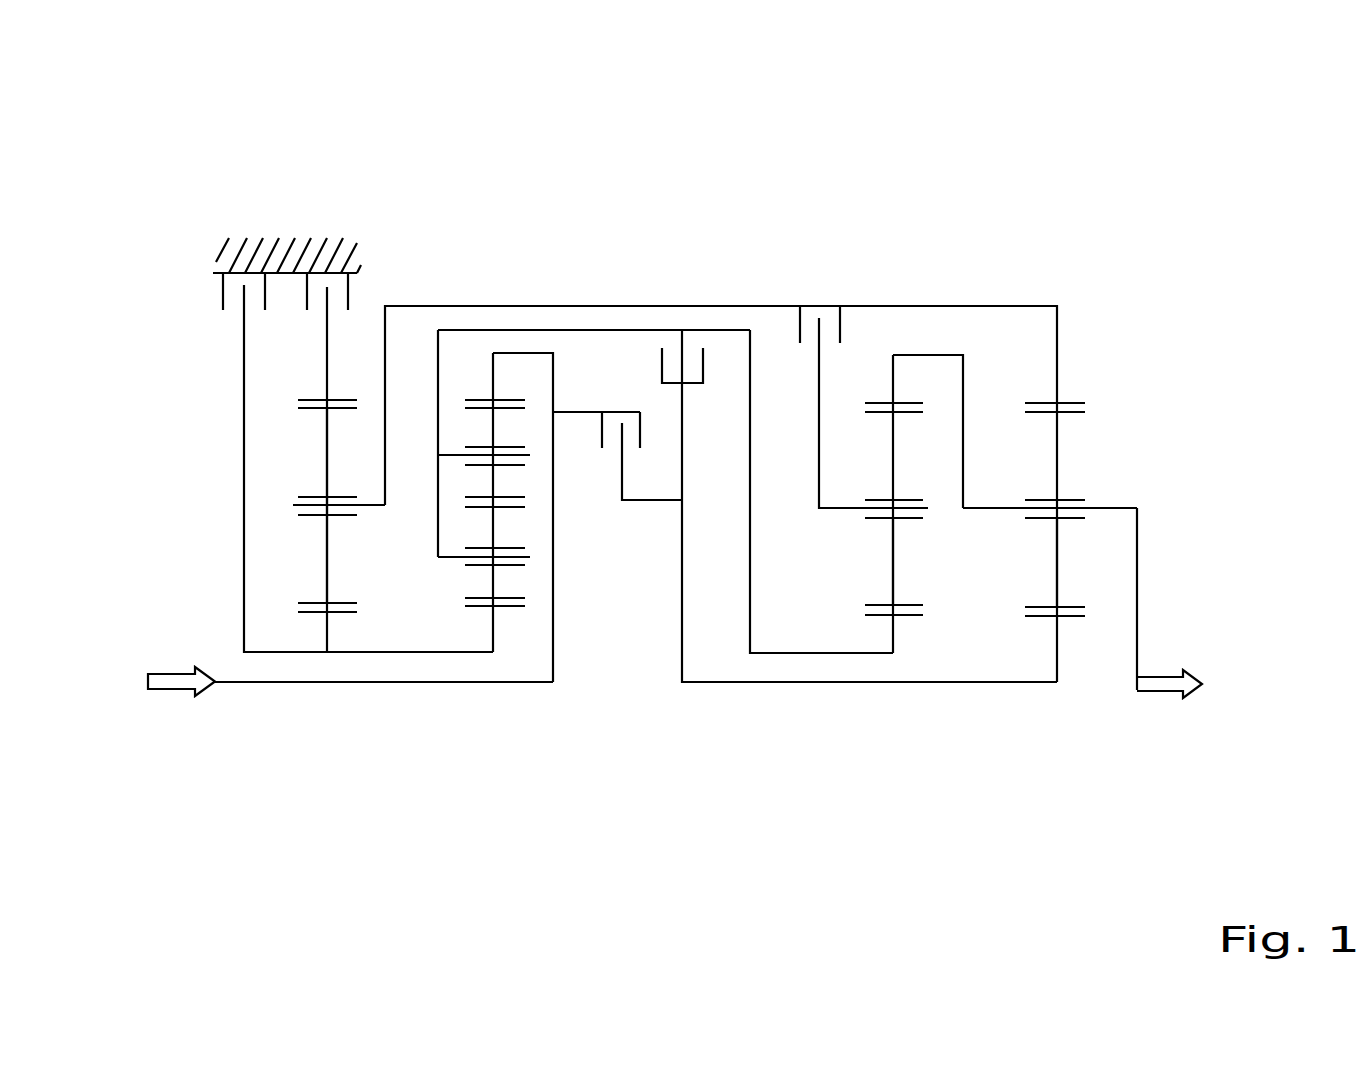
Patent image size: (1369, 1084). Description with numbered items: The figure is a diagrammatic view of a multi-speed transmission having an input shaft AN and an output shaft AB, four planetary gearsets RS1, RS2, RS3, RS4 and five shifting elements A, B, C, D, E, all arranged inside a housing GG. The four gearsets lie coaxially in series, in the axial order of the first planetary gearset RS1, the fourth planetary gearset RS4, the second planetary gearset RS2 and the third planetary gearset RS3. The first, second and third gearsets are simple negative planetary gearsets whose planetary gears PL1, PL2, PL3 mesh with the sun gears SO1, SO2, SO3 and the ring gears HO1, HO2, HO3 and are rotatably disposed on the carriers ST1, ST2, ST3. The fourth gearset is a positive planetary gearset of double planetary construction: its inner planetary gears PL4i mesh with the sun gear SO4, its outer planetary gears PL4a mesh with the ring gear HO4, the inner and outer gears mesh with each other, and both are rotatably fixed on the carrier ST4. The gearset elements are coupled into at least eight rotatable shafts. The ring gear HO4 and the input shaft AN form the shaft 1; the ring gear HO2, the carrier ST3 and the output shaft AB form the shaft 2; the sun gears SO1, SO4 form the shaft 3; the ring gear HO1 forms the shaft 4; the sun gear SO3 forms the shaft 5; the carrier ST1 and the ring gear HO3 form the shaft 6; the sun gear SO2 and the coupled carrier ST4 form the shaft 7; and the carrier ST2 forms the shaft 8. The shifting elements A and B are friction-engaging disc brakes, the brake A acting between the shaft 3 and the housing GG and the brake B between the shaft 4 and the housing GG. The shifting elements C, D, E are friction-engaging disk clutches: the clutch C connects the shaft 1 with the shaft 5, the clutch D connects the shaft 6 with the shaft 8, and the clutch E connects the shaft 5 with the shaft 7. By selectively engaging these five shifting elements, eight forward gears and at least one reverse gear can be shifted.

The housing GG is at (284, 270).
The brake A is at (214, 323).
The brake B is at (308, 324).
The clutch C is at (628, 391).
The clutch D is at (797, 292).
The clutch E is at (712, 351).
The input shaft AN is at (166, 691).
The output shaft AB is at (1167, 695).
The shaft 1 is at (553, 521).
The shaft 2 is at (1140, 594).
The shaft 3 is at (349, 648).
The shaft 4 is at (325, 364).
The shaft 5 is at (728, 684).
The shaft 6 is at (575, 304).
The shaft 7 is at (749, 521).
The shaft 8 is at (820, 437).
The first planetary gearset RS1 is at (221, 471).
The second planetary gearset RS2 is at (844, 505).
The third planetary gearset RS3 is at (1130, 475).
The fourth planetary gearset RS4 is at (497, 471).
The ring gear HO1 is at (328, 395).
The ring gear HO2 is at (893, 385).
The ring gear HO3 is at (1057, 338).
The ring gear HO4 is at (492, 367).
The sun gear SO1 is at (325, 628).
The sun gear SO2 is at (893, 626).
The sun gear SO3 is at (1058, 621).
The sun gear SO4 is at (495, 581).
The carrier ST1 is at (298, 505).
The carrier ST2 is at (842, 509).
The carrier ST3 is at (1107, 509).
The carrier ST4 is at (452, 455).
The planetary gears PL1 is at (327, 571).
The planetary gears PL2 is at (892, 547).
The planetary gears PL3 is at (1057, 462).
The outer planetary gears PL4a is at (490, 427).
The inner planetary gears PL4i is at (522, 606).